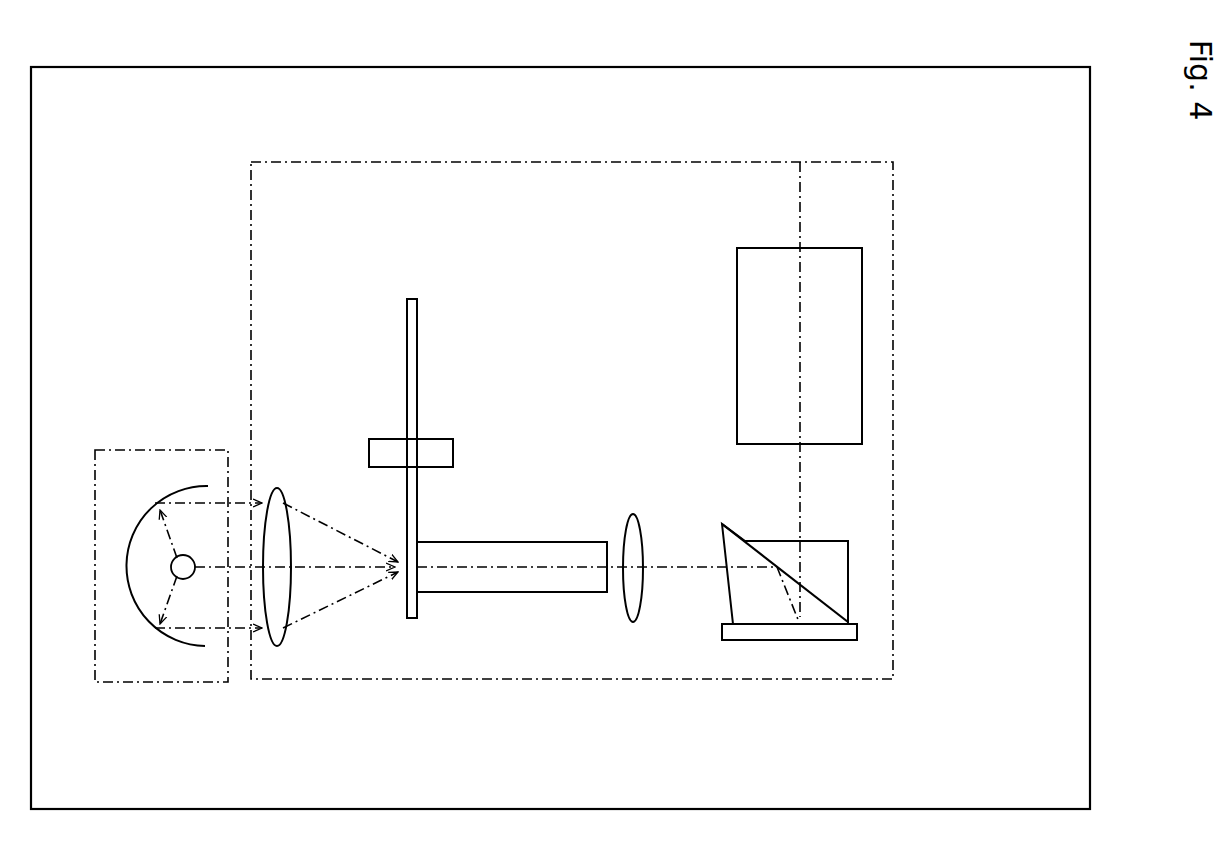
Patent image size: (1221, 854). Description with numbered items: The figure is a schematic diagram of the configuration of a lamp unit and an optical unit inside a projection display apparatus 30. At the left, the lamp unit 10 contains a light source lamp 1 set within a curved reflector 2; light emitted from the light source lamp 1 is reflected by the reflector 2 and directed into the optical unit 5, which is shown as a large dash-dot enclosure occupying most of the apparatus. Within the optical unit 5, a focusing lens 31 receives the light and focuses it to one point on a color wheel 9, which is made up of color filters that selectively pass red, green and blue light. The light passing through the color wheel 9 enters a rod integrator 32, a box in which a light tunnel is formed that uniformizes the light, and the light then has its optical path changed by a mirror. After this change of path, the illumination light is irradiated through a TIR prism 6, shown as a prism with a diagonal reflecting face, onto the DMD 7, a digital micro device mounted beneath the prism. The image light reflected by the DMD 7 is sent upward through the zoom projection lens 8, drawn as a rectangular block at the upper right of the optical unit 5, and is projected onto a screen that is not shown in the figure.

The projection display apparatus 30 is at (665, 67).
The optical unit 5 is at (565, 162).
The lamp unit 10 is at (125, 682).
The light source lamp 1 is at (203, 644).
The reflector 2 is at (185, 579).
The focusing lens 31 is at (275, 488).
The color wheel 9 is at (433, 439).
The rod integrator 32 is at (483, 592).
The TIR prism 6 is at (848, 568).
The DMD 7 is at (780, 640).
The zoom projection lens 8 is at (862, 328).